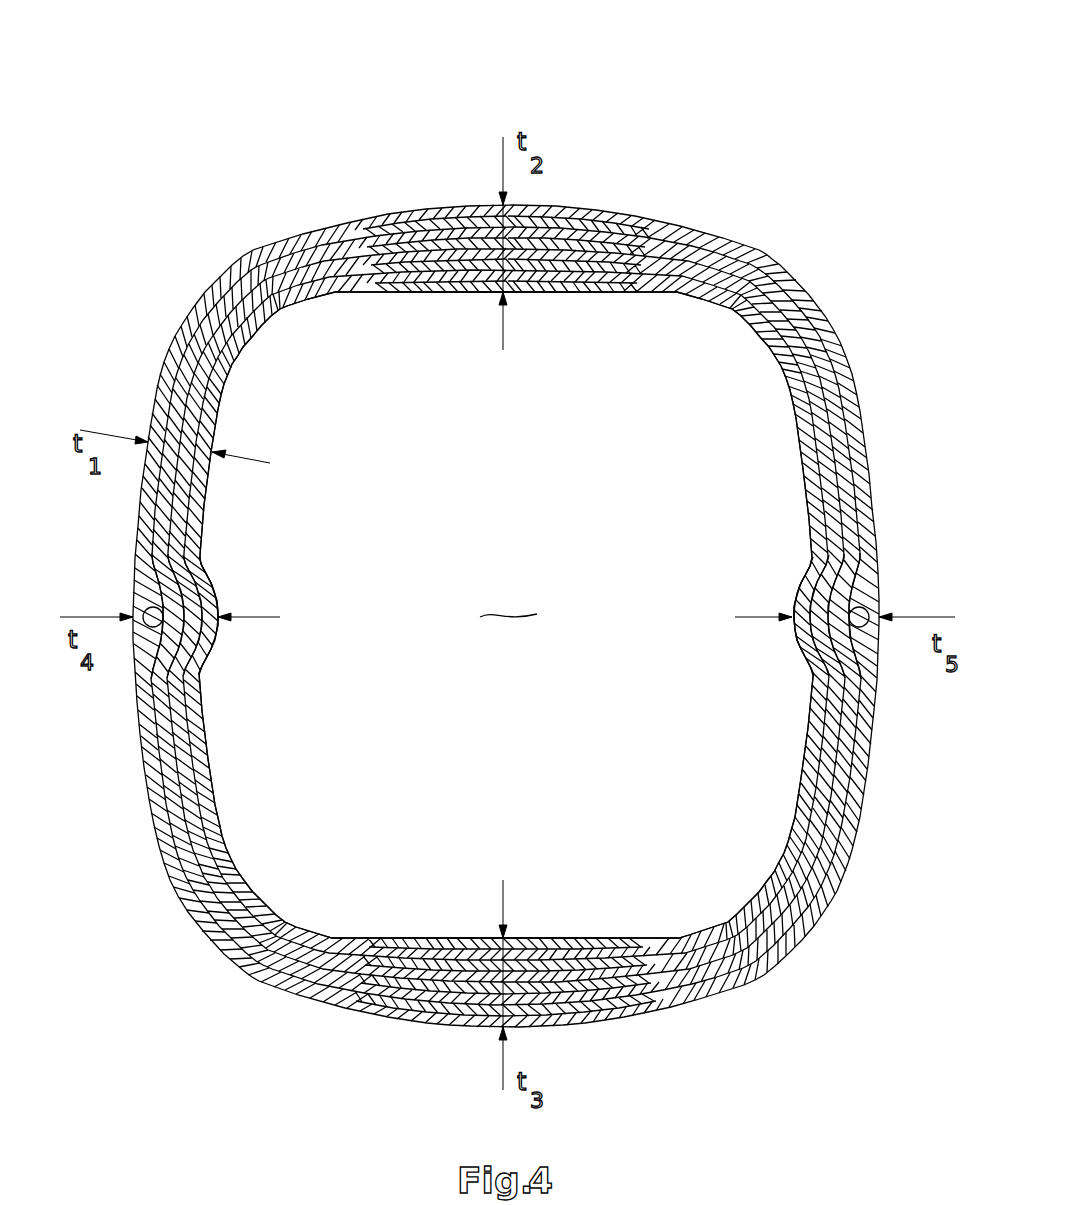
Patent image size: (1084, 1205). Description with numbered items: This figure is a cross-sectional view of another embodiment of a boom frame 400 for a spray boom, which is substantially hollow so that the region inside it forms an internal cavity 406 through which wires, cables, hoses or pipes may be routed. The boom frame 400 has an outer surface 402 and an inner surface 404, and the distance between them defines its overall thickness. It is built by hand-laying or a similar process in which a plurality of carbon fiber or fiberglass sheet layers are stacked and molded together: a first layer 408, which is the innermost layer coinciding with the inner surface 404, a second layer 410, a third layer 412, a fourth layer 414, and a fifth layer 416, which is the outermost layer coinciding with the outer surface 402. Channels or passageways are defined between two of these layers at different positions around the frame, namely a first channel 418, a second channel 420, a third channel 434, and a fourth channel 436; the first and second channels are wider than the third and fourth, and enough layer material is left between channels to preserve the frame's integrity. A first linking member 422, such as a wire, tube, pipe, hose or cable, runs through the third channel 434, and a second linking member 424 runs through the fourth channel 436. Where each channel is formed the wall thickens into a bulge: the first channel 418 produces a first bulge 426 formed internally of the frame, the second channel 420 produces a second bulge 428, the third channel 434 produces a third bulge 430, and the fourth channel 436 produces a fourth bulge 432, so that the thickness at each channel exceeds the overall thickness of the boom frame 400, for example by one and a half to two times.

The boom frame 400 is at (266, 137).
The outer surface 402 is at (207, 283).
The inner surface 404 is at (255, 318).
The central opening 406 is at (509, 599).
The first layer 408 is at (735, 298).
The second layer 410 is at (722, 285).
The third layer 412 is at (823, 410).
The fourth layer 414 is at (815, 335).
The fifth layer 416 is at (795, 280).
The first channel 418 is at (447, 222).
The second channel 420 is at (550, 1000).
The first linking member 422 is at (150, 630).
The second linking member 424 is at (857, 632).
The first bulge 426 is at (547, 300).
The second bulge 428 is at (555, 935).
The third bulge 430 is at (220, 580).
The fourth bulge 432 is at (790, 572).
The third channel 434 is at (143, 593).
The fourth channel 436 is at (868, 595).